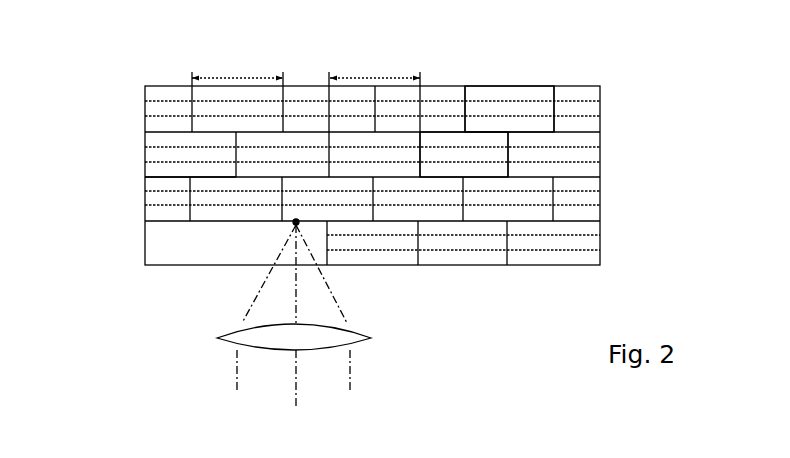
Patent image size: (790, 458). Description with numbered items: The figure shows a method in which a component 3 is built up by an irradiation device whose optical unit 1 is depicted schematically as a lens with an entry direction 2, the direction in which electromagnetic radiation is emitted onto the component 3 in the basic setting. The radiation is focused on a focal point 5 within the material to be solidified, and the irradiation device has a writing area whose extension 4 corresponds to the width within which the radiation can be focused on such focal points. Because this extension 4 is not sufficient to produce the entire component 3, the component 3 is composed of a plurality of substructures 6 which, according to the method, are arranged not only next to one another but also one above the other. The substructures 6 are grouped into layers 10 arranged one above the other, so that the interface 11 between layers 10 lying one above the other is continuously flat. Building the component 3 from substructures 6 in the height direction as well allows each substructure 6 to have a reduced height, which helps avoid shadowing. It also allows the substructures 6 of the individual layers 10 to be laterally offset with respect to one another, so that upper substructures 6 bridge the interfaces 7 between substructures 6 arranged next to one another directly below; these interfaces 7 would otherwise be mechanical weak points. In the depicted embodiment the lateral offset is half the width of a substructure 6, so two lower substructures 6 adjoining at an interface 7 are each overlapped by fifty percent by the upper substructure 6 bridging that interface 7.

The optical unit 1 is at (380, 338).
The entry direction 2 is at (293, 395).
The component 3 is at (97, 73).
The extension 4 is at (306, 65).
The focal point 5 is at (292, 225).
The substructure 6 is at (482, 142).
The interface 7 is at (236, 153).
The layer 10 is at (623, 107).
The interface 11 is at (188, 176).